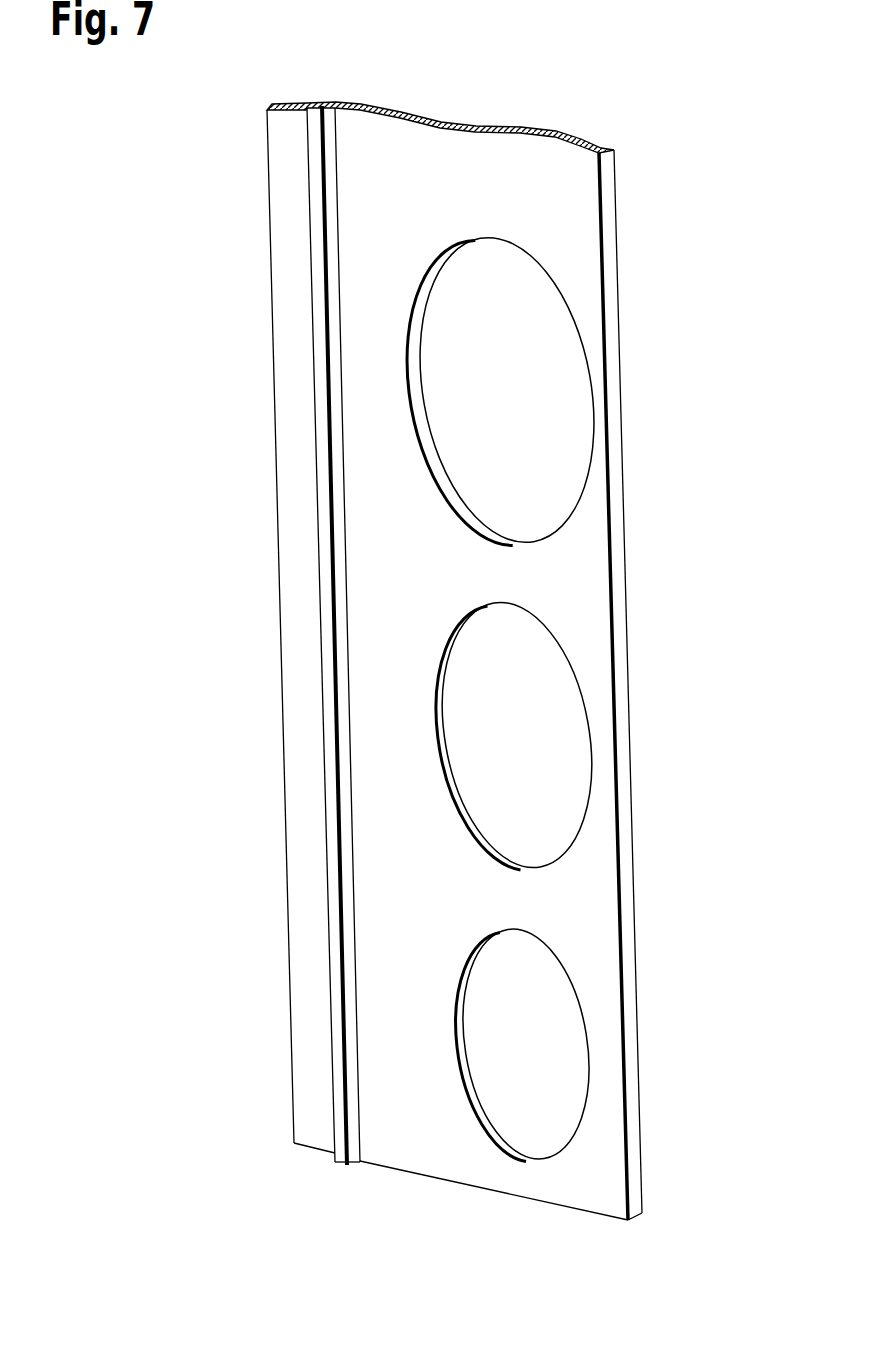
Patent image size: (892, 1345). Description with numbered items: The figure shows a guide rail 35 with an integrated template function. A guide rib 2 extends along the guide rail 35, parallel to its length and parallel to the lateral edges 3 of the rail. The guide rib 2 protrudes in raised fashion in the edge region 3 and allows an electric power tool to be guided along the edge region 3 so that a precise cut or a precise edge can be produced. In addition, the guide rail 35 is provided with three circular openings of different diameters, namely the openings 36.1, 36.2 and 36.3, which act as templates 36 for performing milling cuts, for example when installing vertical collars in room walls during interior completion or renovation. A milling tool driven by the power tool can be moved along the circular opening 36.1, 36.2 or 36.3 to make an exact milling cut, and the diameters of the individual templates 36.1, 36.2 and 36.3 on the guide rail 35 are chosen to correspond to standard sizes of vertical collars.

The guide rib 2 is at (340, 945).
The lateral edge 3 is at (252, 609).
The guide rail 35 is at (455, 180).
The templates 36 is at (564, 696).
The opening 36.1 is at (555, 402).
The opening 36.2 is at (557, 740).
The opening 36.3 is at (552, 1047).